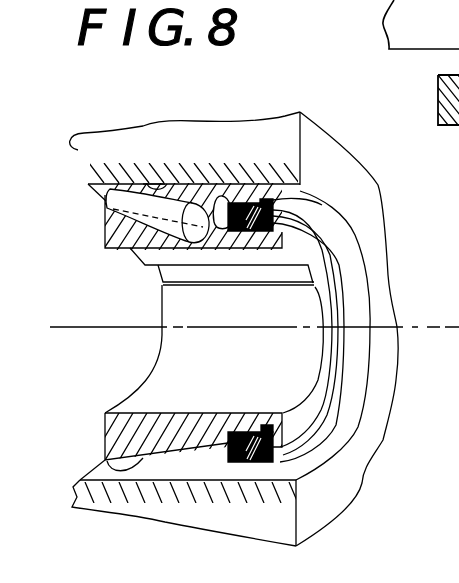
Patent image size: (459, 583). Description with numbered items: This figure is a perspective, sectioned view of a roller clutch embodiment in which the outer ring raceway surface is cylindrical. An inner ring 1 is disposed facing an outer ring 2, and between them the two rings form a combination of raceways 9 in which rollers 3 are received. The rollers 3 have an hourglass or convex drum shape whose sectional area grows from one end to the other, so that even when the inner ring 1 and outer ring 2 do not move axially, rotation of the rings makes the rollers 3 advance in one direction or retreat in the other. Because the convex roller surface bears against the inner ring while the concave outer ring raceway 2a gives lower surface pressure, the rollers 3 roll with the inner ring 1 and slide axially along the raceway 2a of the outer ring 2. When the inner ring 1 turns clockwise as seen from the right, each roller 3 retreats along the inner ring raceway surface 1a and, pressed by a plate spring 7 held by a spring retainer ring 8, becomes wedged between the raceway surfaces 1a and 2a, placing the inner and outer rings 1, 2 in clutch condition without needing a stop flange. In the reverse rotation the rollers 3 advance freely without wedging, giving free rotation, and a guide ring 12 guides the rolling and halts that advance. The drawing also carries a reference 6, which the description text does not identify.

The inner ring 1 is at (104, 247).
The inner ring raceway surface 1a is at (107, 463).
The outer ring 2 is at (88, 145).
The outer ring raceway 2a is at (143, 184).
The rollers 3 is at (105, 203).
The cover member 6 is at (448, 327).
The plate spring 7 is at (300, 187).
The spring retainer ring 8 is at (276, 205).
The raceways 9 is at (449, 55).
The guide ring 12 is at (300, 187).